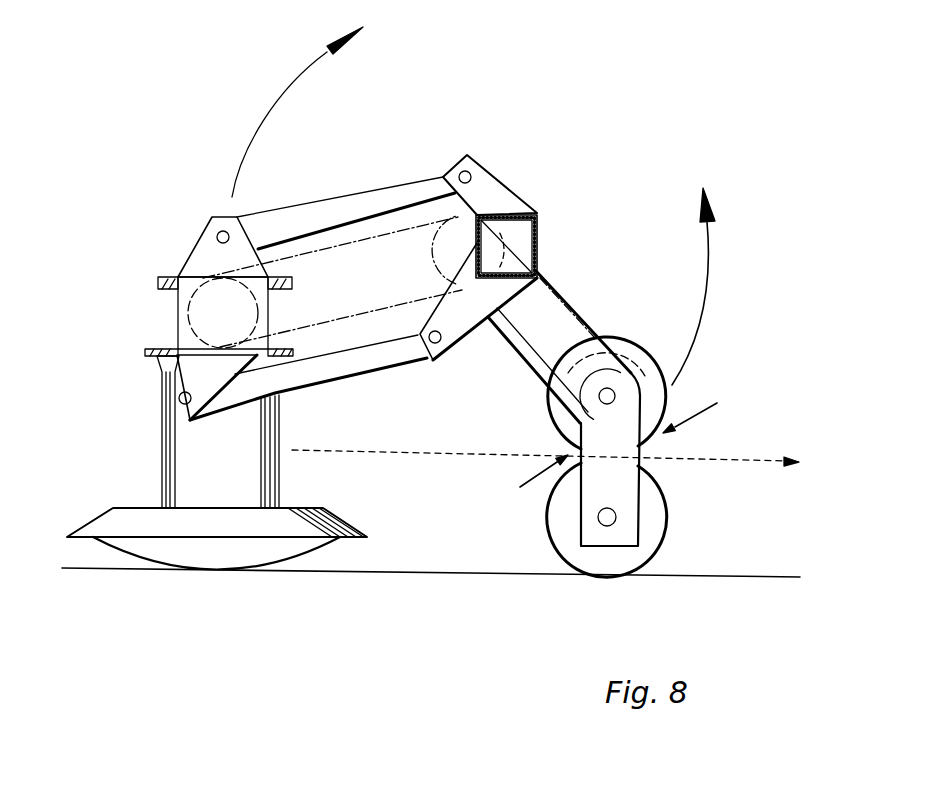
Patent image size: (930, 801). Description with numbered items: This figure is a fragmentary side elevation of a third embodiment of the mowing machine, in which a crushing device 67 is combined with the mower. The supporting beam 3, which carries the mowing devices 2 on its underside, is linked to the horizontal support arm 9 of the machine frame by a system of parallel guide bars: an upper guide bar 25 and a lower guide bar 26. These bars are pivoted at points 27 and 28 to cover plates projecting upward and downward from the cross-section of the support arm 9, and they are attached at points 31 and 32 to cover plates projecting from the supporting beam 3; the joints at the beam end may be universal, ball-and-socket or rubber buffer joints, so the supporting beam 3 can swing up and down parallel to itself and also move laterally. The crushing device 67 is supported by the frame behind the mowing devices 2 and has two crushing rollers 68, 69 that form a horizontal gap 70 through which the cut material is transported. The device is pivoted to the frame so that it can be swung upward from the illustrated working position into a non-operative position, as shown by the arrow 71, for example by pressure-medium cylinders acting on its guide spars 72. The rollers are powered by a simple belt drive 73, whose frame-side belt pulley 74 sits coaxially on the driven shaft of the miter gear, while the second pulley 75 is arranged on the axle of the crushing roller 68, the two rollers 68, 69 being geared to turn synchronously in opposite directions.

The mowing device 2 is at (290, 517).
The supporting beam 3 is at (180, 306).
The support arm 9 is at (540, 246).
The upper guide bar 25 is at (343, 202).
The lower guide bar 26 is at (347, 362).
The pivot point 27 is at (470, 172).
The pivot point 28 is at (438, 345).
The attachment point 31 is at (218, 233).
The attachment point 32 is at (179, 400).
The crushing device 67 is at (545, 426).
The crushing roller 68 is at (652, 373).
The crushing roller 69 is at (653, 502).
The gap 70 is at (530, 495).
The arrow 71 is at (712, 275).
The guide spar 72 is at (575, 305).
The belt drive 73 is at (521, 354).
The frame-side belt pulley 74 is at (437, 244).
The second pulley 75 is at (600, 357).